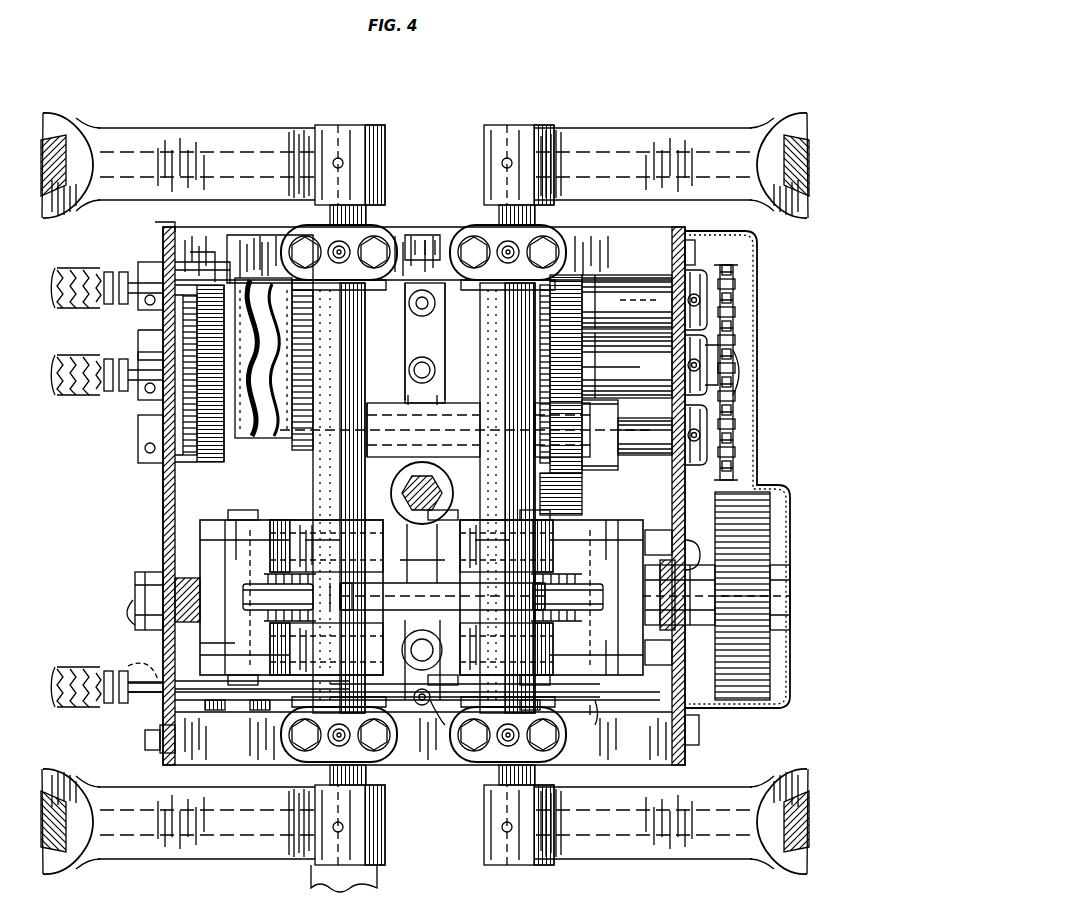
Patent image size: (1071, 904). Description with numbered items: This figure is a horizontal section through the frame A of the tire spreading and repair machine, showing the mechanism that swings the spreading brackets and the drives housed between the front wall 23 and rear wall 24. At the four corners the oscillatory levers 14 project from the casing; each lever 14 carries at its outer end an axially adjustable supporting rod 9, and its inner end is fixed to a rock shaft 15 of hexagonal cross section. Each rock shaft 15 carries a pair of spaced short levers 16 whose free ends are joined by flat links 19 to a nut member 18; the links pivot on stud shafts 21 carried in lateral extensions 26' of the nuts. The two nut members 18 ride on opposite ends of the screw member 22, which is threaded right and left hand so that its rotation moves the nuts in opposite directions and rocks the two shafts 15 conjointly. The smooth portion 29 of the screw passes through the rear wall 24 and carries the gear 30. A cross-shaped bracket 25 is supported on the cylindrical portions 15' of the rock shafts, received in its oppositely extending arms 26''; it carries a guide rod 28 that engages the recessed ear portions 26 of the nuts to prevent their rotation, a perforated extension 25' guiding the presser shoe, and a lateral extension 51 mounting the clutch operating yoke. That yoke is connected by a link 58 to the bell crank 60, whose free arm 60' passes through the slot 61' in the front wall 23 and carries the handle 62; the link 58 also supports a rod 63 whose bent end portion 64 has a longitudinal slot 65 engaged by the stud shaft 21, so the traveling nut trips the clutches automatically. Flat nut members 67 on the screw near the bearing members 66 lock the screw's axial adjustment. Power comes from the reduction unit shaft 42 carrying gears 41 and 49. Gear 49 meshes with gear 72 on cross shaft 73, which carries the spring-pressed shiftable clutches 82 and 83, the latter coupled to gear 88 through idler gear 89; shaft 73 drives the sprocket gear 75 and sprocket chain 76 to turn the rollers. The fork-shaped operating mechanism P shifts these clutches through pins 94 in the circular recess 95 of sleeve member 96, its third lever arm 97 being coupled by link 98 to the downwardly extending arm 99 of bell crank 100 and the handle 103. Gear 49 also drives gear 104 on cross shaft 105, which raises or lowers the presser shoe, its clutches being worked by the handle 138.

The supporting rod 9 is at (55, 150).
The oscillatory lever 14 is at (202, 135).
The rock shaft 15 is at (432, 508).
The short lever 16 is at (310, 518).
The nut member 18 is at (421, 597).
The flat link 19 is at (265, 520).
The stud shaft 21 is at (612, 515).
The screw member 22 is at (439, 688).
The front wall 23 is at (163, 527).
The rear wall 24 is at (680, 488).
The cross-shaped bracket 25 is at (442, 567).
The perforated extension 25' is at (410, 493).
The recessed ear portion 26 is at (205, 652).
The lateral extension 26' is at (452, 576).
The oppositely extending arm 26'' is at (407, 531).
The guide rod 28 is at (423, 597).
The smooth portion 29 is at (698, 552).
The gear 30 is at (770, 518).
The gear 41 is at (210, 497).
The reduction unit shaft 42 is at (644, 435).
The gear 49 is at (578, 480).
The lateral extension 51 is at (412, 632).
The link 58 is at (395, 684).
The bell crank 60 is at (262, 710).
The free arm 60' is at (145, 701).
The slot 61' is at (143, 669).
The handle 62 is at (92, 668).
The rod 63 is at (436, 721).
The horizontal end portion 64 is at (602, 721).
The longitudinal slot 65 is at (160, 568).
The bearing member 66 is at (150, 628).
The flat nut member 67 is at (680, 625).
The gear 72 is at (592, 352).
The cross shaft 73 is at (740, 365).
The sprocket gear 75 is at (718, 345).
The sprocket chain 76 is at (735, 303).
The shiftable clutch 82 is at (600, 368).
The shiftable clutch 83 is at (262, 368).
The gear 88 is at (140, 395).
The idler gear 89 is at (163, 327).
The pin 94 is at (436, 366).
The circular recess 95 is at (420, 410).
The sleeve member 96 is at (440, 410).
The third lever arm 97 is at (423, 493).
The link 98 is at (270, 256).
The downwardly extending arm 99 is at (292, 487).
The bell crank 100 is at (190, 282).
The handle 103 is at (92, 270).
The gear 104 is at (590, 290).
The cross shaft 105 is at (645, 299).
The handle 138 is at (88, 382).
The frame A is at (163, 497).
The fork-shaped operating mechanism P is at (405, 355).
The cylindrical portion 15' is at (326, 596).